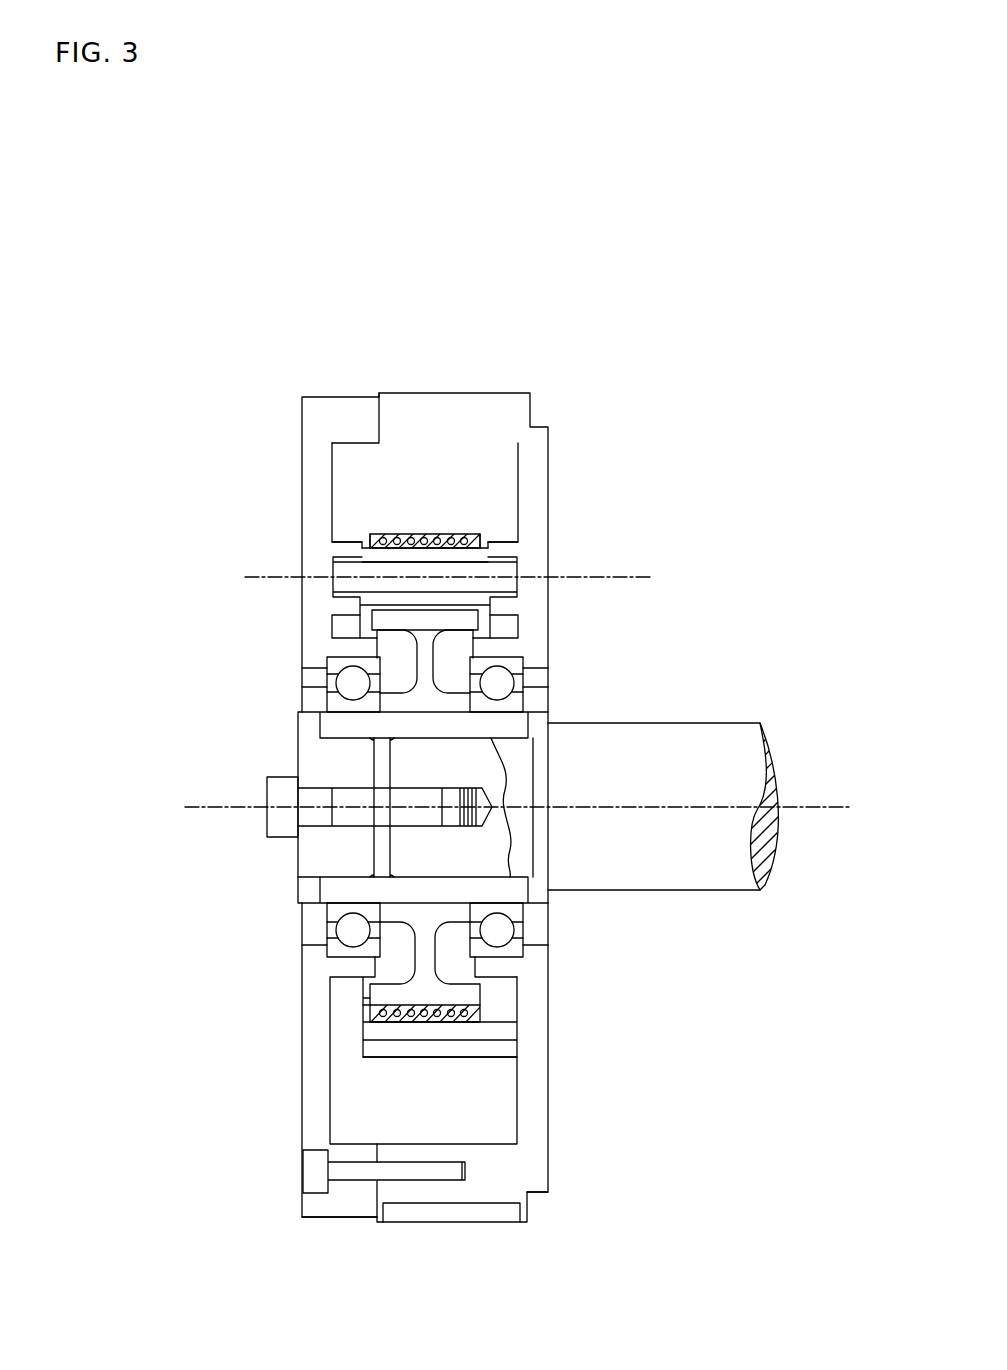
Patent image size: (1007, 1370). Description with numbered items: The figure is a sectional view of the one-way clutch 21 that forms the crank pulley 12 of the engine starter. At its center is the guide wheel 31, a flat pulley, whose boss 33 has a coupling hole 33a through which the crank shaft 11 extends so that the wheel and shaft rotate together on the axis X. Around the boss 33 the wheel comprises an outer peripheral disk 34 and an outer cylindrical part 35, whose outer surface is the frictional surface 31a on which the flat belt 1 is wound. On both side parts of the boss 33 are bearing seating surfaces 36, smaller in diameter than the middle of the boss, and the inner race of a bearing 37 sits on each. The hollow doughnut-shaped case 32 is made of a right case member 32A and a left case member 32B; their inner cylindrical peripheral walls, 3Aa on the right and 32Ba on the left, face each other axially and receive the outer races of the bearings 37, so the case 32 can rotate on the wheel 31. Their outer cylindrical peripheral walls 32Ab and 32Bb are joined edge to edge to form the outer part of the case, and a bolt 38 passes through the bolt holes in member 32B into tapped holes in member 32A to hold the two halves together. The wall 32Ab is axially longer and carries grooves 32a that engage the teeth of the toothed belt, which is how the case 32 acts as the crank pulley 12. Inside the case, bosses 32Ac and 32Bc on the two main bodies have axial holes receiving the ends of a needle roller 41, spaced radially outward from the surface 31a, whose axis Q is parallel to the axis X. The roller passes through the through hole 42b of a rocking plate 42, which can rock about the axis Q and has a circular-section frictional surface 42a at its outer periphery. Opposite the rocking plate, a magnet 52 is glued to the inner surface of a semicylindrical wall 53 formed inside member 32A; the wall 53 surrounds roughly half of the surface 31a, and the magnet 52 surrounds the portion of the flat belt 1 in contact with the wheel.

The crank pulley 12 is at (425, 190).
The case 32 is at (487, 273).
The case member 32A is at (443, 385).
The case member 32B is at (348, 390).
The boss 32Ac is at (507, 540).
The boss 32Bc is at (347, 537).
The inner cylindrical peripheral wall 32Ba is at (347, 637).
The bearing support portion of first housing member 3Aa is at (500, 636).
The outer cylindrical peripheral wall 32Bb is at (344, 1204).
The grooves 32a is at (453, 1217).
The outer cylindrical peripheral wall 32Ab is at (535, 1186).
The one-way clutch 21 is at (465, 528).
The rocking plate 42 is at (438, 556).
The frictional surface 42a is at (484, 545).
The through hole 42b is at (402, 572).
The needle roller 41 is at (335, 574).
The axis of needle roller Q is at (617, 578).
The axis of guide wheel X is at (813, 803).
The boss 33 is at (452, 925).
The coupling hole 33a is at (336, 874).
The outer peripheral disk 34 is at (440, 955).
The outer cylindrical part 35 is at (472, 996).
The bearing seating surfaces 36 is at (336, 712).
The bearing 37 is at (327, 687).
The guide wheel 31 is at (358, 993).
The frictional surface 31a is at (390, 1010).
The flat belt 1 is at (409, 1026).
The magnet 52 is at (453, 1042).
The semicylindrical wall 53 is at (497, 1070).
The bolt 38 is at (302, 1173).
The crank shaft 11 is at (682, 873).